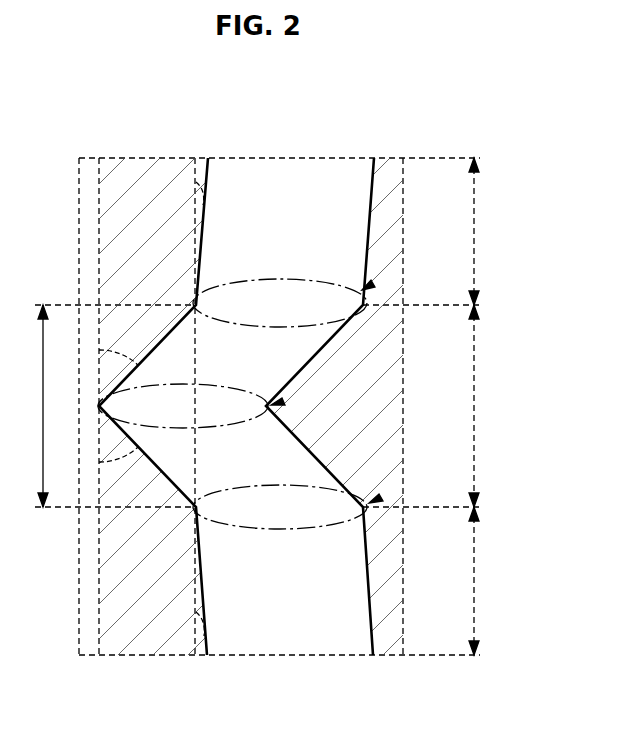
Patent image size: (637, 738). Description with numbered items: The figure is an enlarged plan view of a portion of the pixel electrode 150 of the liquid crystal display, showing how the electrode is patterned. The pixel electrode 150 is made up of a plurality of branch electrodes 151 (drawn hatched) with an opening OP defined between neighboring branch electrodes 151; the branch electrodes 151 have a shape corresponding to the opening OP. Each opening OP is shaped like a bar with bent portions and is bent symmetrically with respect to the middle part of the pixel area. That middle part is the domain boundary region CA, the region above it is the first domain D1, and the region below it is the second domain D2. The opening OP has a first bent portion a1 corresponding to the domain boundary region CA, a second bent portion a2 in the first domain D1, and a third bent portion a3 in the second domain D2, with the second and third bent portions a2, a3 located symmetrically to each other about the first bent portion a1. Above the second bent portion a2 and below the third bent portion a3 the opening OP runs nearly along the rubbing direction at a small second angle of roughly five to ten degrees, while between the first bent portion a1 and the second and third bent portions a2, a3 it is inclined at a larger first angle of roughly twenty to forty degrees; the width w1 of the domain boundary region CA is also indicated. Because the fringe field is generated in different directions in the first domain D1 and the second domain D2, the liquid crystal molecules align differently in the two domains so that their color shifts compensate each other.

The pixel electrode 150 is at (251, 437).
The branch electrode 151 is at (142, 177).
The opening OP is at (303, 180).
The width of center area w1 is at (28, 406).
The first domain D1 is at (490, 231).
The second domain D2 is at (492, 581).
The domain boundary region CA is at (492, 406).
The first bent portion a1 is at (278, 404).
The second bent portion a2 is at (368, 285).
The third bent portion a3 is at (375, 500).